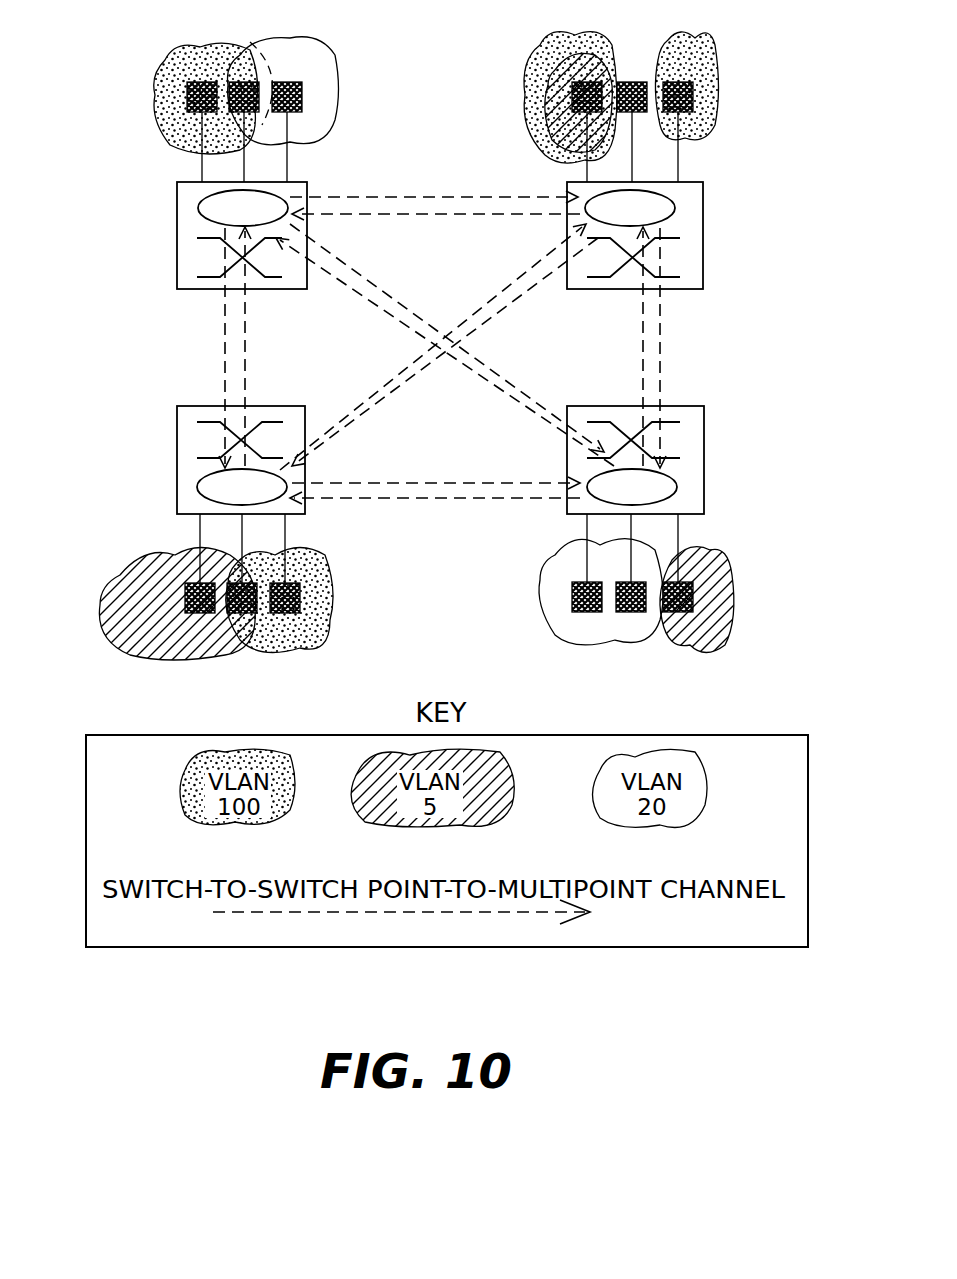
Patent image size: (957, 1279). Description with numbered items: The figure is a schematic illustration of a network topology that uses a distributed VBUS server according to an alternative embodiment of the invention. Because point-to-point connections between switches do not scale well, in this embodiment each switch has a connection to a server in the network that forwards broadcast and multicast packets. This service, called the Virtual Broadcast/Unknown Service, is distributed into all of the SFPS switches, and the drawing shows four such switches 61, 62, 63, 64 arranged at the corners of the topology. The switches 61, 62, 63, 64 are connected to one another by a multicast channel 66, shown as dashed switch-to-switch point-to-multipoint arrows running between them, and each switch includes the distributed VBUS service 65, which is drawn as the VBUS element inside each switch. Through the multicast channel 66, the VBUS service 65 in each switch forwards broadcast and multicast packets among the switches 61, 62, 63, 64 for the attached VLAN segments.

The switch 61 is at (307, 183).
The switch 62 is at (703, 183).
The switch 63 is at (305, 407).
The switch 64 is at (704, 407).
The distributed VBUS service 65 is at (198, 208).
The multicast channel 66 is at (419, 197).